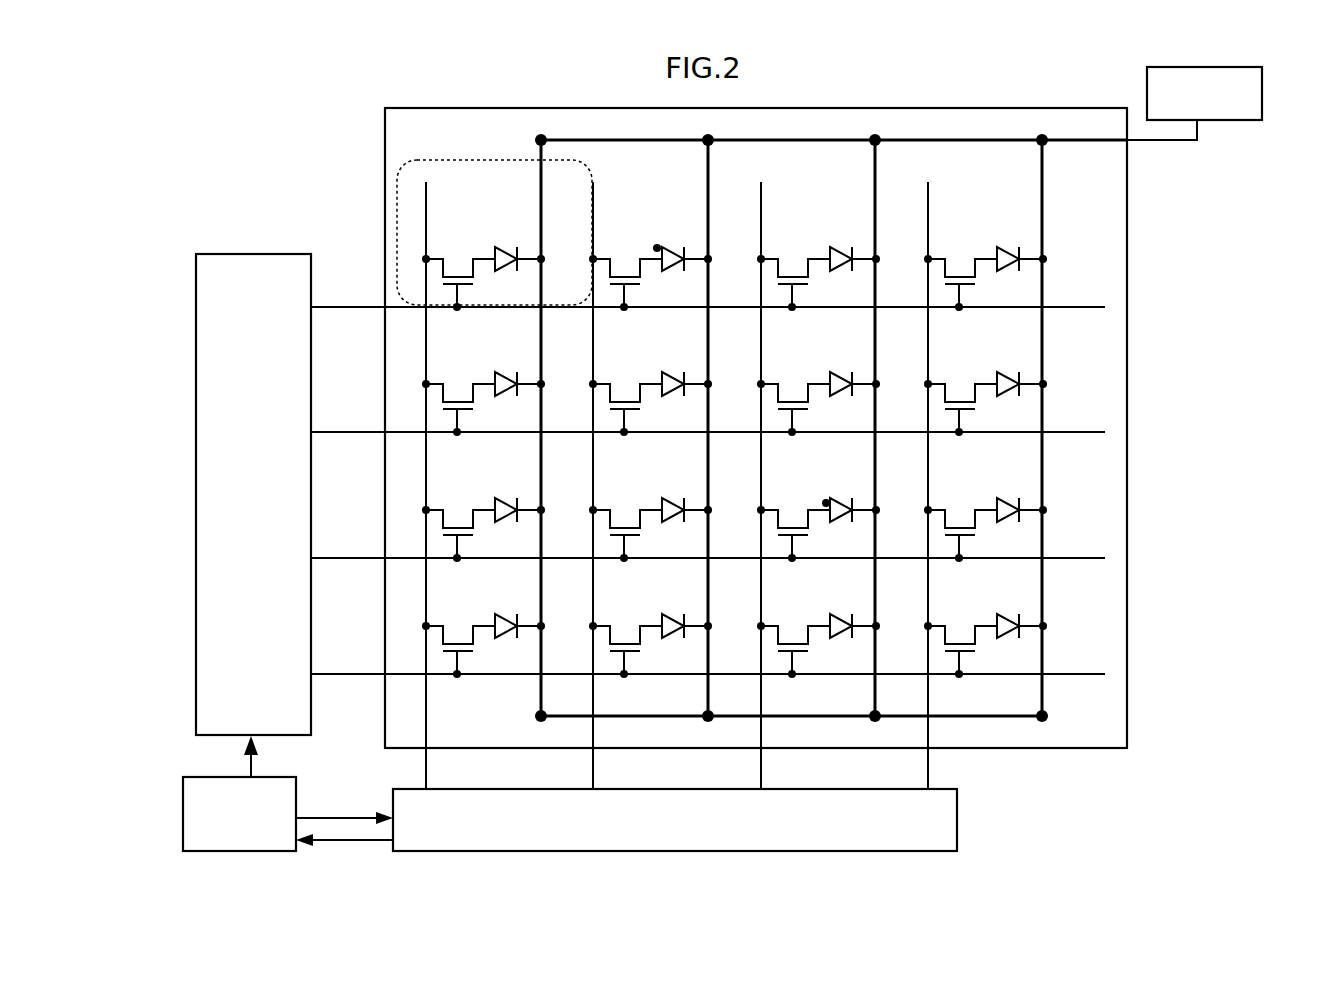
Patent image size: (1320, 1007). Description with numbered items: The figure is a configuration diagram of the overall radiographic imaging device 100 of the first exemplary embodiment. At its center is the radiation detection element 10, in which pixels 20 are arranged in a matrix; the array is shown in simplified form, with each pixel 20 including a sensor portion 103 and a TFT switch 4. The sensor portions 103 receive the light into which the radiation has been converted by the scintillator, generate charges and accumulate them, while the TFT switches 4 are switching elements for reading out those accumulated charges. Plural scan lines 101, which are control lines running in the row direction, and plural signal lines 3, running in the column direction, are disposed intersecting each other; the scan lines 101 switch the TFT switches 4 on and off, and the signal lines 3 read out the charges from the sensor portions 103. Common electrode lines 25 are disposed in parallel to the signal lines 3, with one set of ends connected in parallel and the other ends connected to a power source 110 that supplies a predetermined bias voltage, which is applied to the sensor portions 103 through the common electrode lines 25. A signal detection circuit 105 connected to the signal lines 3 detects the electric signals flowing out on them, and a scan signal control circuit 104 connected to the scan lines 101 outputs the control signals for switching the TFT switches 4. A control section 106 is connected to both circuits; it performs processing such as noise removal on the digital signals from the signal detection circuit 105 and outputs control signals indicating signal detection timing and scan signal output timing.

The radiographic imaging device 100 is at (1275, 101).
The radiation detection element 10 is at (1043, 110).
The power source 110 is at (1228, 121).
The scan signal control circuit 104 is at (240, 253).
The signal detection circuit 105 is at (957, 832).
The control section 106 is at (296, 792).
The scan lines 101 is at (1070, 308).
The signal lines 3 is at (424, 723).
The common electrode lines 25 is at (541, 213).
The pixels 20 is at (494, 234).
The TFT switches 4 is at (449, 287).
The sensor portions 103 is at (509, 239).